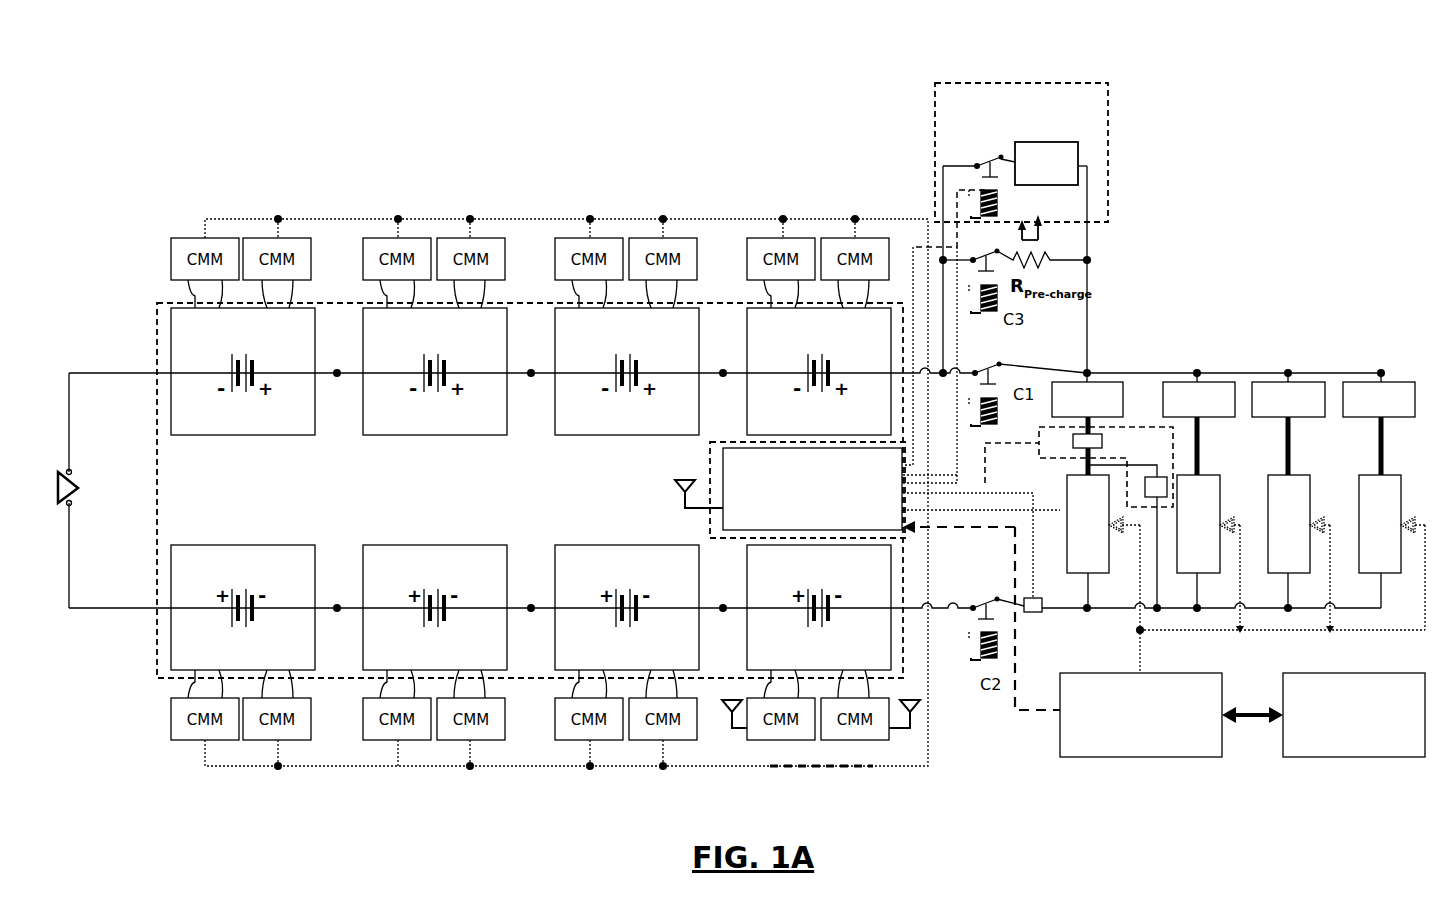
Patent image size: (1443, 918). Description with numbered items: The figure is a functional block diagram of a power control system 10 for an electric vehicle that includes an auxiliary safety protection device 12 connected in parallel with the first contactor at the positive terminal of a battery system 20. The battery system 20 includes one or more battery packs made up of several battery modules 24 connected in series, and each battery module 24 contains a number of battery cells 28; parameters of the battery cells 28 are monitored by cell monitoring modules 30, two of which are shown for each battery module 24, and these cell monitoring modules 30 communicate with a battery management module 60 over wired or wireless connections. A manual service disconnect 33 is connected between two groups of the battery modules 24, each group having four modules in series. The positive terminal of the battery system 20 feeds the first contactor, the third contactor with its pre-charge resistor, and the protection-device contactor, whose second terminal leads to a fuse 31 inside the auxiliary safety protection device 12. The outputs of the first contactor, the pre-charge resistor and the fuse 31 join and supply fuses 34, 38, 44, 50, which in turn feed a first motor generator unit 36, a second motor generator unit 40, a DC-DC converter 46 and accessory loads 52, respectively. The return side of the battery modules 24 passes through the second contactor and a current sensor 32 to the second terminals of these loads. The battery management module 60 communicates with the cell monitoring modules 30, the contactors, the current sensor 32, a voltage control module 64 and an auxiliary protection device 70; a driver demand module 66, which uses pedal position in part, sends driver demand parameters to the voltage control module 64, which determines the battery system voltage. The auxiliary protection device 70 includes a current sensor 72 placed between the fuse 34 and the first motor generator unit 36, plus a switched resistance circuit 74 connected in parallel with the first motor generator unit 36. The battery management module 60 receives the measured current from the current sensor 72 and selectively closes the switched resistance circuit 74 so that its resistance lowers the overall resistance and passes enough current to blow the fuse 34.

The power control system 10 is at (193, 150).
The ASPD 12 is at (1052, 165).
The battery system 20 is at (157, 303).
The battery module 24 is at (498, 473).
The battery cell 28 is at (513, 470).
The cell monitoring module 30 is at (171, 262).
The fuse 31 is at (1055, 142).
The current sensor 32 is at (1042, 612).
The manual service disconnect 33 is at (120, 484).
The fuse 34 is at (1060, 382).
The first motor generator unit 36 is at (1067, 505).
The fuse 38 is at (1170, 382).
The second motor generator unit 40 is at (1207, 475).
The fuse 44 is at (1258, 382).
The DC-DC converter 46 is at (1276, 475).
The fuse 50 is at (1346, 382).
The accessory loads 52 is at (1359, 485).
The battery management module 60 is at (723, 482).
The voltage control module 64 is at (1120, 757).
The driver demand module 66 is at (1323, 757).
The auxiliary protection device 70 is at (1079, 498).
The current sensor 72 is at (1073, 440).
The switched resistance circuit 74 is at (1140, 598).